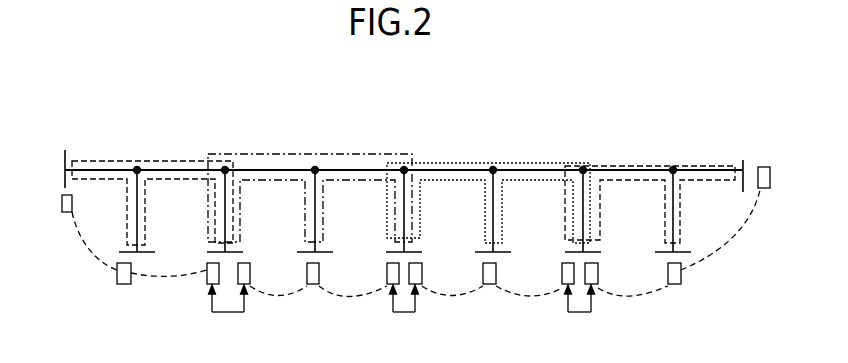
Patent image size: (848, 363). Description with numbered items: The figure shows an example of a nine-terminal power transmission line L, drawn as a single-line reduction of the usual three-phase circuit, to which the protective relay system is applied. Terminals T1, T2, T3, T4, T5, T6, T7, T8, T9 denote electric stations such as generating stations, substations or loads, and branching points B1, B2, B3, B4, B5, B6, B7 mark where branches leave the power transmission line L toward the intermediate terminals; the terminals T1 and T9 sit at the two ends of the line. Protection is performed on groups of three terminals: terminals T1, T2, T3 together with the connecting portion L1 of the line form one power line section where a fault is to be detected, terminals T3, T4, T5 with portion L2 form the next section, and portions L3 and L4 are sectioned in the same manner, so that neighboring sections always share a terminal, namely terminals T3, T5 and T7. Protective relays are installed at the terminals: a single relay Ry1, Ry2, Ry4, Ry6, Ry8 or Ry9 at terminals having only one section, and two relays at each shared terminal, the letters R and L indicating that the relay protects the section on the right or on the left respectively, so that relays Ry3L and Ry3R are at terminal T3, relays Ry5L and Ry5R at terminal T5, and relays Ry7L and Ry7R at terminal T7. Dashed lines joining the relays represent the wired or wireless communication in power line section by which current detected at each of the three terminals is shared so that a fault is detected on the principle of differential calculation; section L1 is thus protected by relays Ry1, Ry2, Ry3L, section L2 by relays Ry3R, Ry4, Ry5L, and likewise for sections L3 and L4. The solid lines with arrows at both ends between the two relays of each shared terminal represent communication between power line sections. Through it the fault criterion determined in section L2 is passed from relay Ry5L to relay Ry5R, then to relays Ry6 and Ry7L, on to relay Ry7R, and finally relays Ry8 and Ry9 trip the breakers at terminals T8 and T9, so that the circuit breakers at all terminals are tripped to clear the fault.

The power transmission line L is at (460, 203).
The power line section L1 is at (91, 161).
The power line section L2 is at (253, 154).
The power line section L3 is at (524, 163).
The power line section L4 is at (623, 166).
The terminal T1 is at (65, 158).
The terminal T2 is at (149, 251).
The terminal T3 is at (237, 251).
The terminal T4 is at (327, 251).
The terminal T5 is at (416, 251).
The terminal T6 is at (505, 251).
The terminal T7 is at (595, 251).
The terminal T8 is at (685, 251).
The terminal T9 is at (744, 160).
The branching point B1 is at (137, 170).
The branching point B2 is at (225, 170).
The branching point B3 is at (315, 170).
The branching point B4 is at (404, 170).
The branching point B5 is at (493, 170).
The branching point B6 is at (583, 170).
The branching point B7 is at (673, 170).
The protective relay Ry1 is at (66, 213).
The protective relay Ry2 is at (124, 286).
The protective relay Ry3L is at (208, 286).
The protective relay Ry3R is at (248, 286).
The protective relay Ry4 is at (314, 286).
The protective relay Ry5L is at (388, 286).
The protective relay Ry5R is at (420, 286).
The protective relay Ry6 is at (491, 286).
The protective relay Ry7L is at (563, 286).
The protective relay Ry7R is at (596, 286).
The protective relay Ry8 is at (676, 286).
The protective relay Ry9 is at (766, 190).